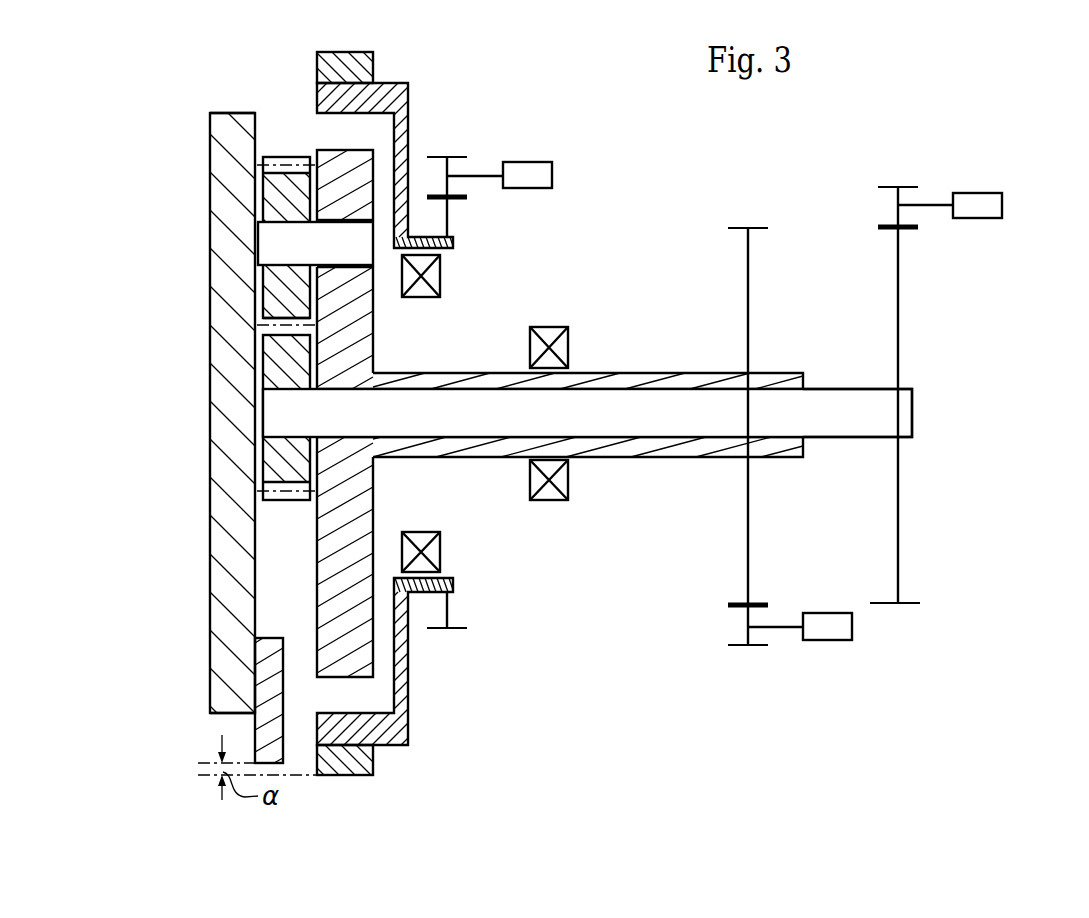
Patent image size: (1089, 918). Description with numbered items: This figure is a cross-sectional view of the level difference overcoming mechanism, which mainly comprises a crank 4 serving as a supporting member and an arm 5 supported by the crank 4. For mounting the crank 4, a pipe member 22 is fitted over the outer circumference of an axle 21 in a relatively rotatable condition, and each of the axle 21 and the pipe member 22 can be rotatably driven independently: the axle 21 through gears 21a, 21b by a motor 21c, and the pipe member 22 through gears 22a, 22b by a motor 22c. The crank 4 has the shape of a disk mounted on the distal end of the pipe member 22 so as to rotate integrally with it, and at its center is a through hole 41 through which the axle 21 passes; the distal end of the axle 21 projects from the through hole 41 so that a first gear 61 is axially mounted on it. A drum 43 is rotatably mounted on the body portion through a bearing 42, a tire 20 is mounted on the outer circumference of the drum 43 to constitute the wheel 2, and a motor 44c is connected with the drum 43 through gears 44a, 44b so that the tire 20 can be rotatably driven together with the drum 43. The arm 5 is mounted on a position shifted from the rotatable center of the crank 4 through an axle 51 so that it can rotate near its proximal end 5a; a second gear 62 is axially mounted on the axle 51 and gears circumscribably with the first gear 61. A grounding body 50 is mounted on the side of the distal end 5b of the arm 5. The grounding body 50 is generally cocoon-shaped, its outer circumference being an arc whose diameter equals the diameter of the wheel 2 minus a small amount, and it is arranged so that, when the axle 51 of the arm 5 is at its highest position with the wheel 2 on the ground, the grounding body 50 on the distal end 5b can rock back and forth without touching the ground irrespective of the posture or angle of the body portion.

The wheel 2 is at (348, 389).
The crank 4 is at (298, 573).
The arm 5 is at (200, 292).
The proximal end 5a is at (232, 113).
The distal end 5b is at (222, 713).
The tire 20 is at (352, 52).
The axle 21 is at (842, 390).
The gear 21a is at (898, 312).
The gear 21b is at (895, 215).
The motor 21c is at (1003, 205).
The pipe member 22 is at (622, 372).
The gear 22a is at (747, 522).
The gear 22b is at (747, 633).
The motor 22c is at (823, 642).
The through hole 41 is at (418, 427).
The bearing 42 is at (440, 272).
The drum 43 is at (316, 62).
The gear 44a is at (447, 215).
The gear 44b is at (449, 160).
The motor 44c is at (552, 171).
The grounding body 50 is at (283, 732).
The axle 51 is at (374, 252).
The first gear 61 is at (280, 500).
The second gear 62 is at (262, 202).